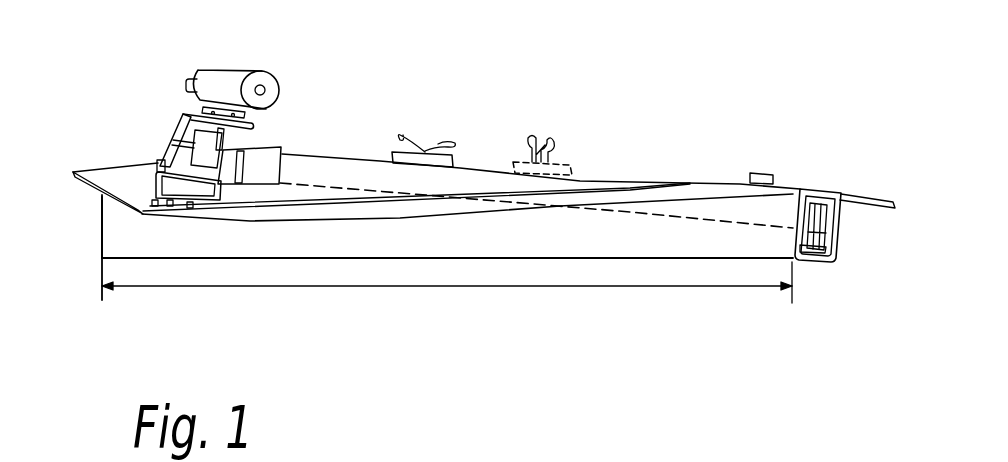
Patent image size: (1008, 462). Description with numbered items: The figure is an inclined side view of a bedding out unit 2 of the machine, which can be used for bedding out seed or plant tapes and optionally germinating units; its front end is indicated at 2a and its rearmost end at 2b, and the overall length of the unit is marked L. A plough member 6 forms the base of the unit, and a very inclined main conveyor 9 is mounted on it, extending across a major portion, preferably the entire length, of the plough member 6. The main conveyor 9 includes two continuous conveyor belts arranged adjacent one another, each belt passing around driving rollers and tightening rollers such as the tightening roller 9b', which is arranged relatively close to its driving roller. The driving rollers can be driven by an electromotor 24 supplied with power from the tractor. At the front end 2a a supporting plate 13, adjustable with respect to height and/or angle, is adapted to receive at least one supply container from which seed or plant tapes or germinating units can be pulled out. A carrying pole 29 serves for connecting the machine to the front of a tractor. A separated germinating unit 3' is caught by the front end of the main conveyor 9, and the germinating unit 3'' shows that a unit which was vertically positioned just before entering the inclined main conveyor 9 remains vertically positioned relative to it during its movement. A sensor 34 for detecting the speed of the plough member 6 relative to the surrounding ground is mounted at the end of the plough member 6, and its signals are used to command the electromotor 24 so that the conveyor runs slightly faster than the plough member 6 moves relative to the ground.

The bedding out unit 2 is at (295, 259).
The front end of the bedding out unit 2a is at (97, 243).
The rearmost end of the bedding out unit 2b is at (812, 262).
The germinating unit 3' is at (450, 113).
The germinating unit on the main conveyor 3'' is at (565, 134).
The plough member 6 is at (673, 181).
The main conveyor 9 is at (274, 149).
The tightening roller 9b' is at (186, 265).
The supporting plate 13 is at (118, 190).
The electromotor 24 is at (231, 83).
The carrying pole 29 is at (308, 167).
The sensor 34 is at (767, 175).
The hull length L is at (447, 303).